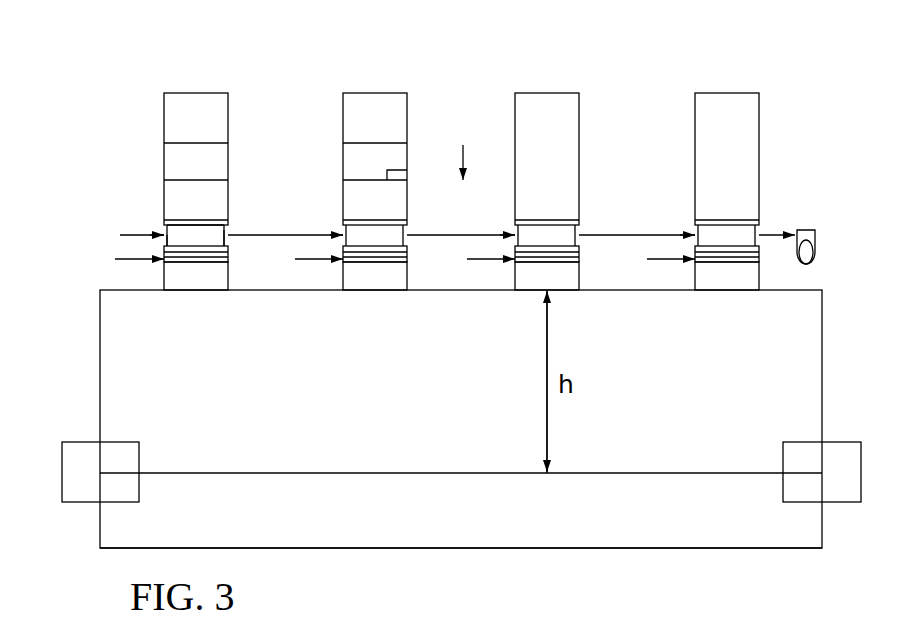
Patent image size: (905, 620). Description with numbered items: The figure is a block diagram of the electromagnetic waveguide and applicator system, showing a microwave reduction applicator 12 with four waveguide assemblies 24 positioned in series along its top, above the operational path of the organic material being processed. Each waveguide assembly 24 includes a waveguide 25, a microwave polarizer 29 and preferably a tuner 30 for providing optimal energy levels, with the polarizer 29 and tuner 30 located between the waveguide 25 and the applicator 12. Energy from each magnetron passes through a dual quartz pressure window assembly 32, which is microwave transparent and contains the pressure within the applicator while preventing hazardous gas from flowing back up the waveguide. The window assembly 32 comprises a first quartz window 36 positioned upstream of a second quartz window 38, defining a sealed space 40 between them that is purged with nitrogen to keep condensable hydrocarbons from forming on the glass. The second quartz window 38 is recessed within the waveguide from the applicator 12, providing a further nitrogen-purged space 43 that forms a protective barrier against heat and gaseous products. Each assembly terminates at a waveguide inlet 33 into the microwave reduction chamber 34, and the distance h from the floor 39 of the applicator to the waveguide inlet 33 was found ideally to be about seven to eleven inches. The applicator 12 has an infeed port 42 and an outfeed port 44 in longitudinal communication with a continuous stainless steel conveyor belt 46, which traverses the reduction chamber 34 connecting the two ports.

The microwave reduction applicator 12 is at (825, 303).
The waveguide assembly 24 is at (142, 133).
The waveguide 25 is at (228, 104).
The microwave polarizer 29 is at (230, 160).
The tuner 30 is at (397, 170).
The dual quartz pressure window assembly 32 is at (229, 243).
The waveguide inlet 33 is at (530, 291).
The microwave reduction chamber 34 is at (704, 434).
The first quartz window 36 is at (183, 223).
The second quartz window 38 is at (218, 243).
The floor 39 is at (602, 473).
The sealed space 40 is at (181, 240).
The infeed port 42 is at (84, 441).
The space 43 is at (194, 263).
The outfeed port 44 is at (842, 441).
The conveyor belt 46 is at (274, 475).